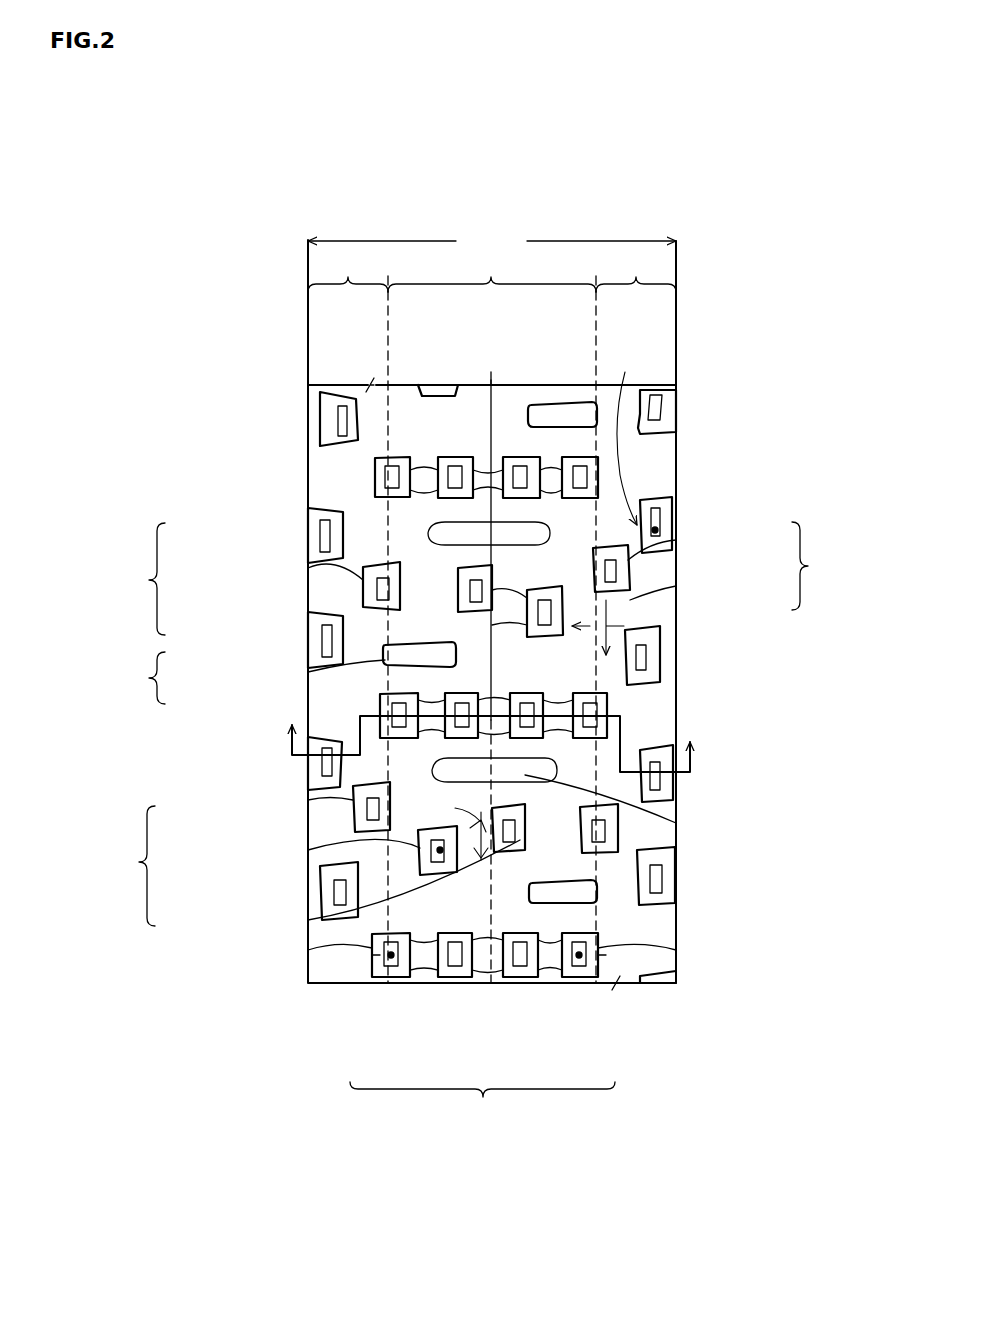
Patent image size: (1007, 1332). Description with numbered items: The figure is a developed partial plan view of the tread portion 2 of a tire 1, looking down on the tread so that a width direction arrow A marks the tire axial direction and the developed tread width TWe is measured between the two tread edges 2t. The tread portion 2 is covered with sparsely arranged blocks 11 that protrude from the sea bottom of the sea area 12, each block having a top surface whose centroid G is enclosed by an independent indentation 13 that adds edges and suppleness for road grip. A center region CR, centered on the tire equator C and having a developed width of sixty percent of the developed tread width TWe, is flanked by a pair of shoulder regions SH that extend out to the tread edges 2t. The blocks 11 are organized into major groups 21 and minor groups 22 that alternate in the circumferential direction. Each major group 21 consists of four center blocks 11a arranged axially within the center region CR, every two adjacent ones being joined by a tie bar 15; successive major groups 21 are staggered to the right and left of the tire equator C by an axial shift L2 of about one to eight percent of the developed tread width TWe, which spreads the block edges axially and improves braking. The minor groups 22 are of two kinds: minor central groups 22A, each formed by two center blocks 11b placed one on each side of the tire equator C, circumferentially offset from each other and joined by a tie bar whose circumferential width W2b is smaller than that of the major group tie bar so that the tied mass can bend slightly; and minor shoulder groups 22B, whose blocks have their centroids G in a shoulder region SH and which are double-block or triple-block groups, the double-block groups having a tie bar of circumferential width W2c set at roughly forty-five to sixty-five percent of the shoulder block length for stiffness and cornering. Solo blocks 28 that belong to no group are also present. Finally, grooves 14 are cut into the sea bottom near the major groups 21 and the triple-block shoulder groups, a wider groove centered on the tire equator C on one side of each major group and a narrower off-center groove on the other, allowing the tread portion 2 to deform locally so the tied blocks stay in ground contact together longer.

The pneumatic tire 1 is at (754, 288).
The tread portion 2 is at (693, 305).
The tread edge 2t is at (330, 520).
The sea area 12 is at (680, 452).
The groove 14 is at (547, 415).
The major group 21 is at (440, 463).
The tie bar 15 is at (365, 590).
The block 11 is at (318, 535).
The center block 11b is at (470, 600).
The indentation 13 is at (654, 647).
The solo block 28 is at (648, 665).
The minor group 22 is at (330, 790).
The minor central group 22A is at (117, 677).
The minor shoulder group 22B is at (484, 578).
The centroid G is at (666, 522).
The center block 11a is at (380, 970).
The section line A- A is at (488, 744).
The developed tread width TWe is at (492, 242).
The shoulder region SH is at (492, 274).
The center region CR is at (492, 274).
The tire equator C is at (491, 368).
The circumferential width of tie bar W2c is at (629, 435).
The circumferential width of tie bar W2b is at (456, 822).
The axial shift L2 is at (602, 623).